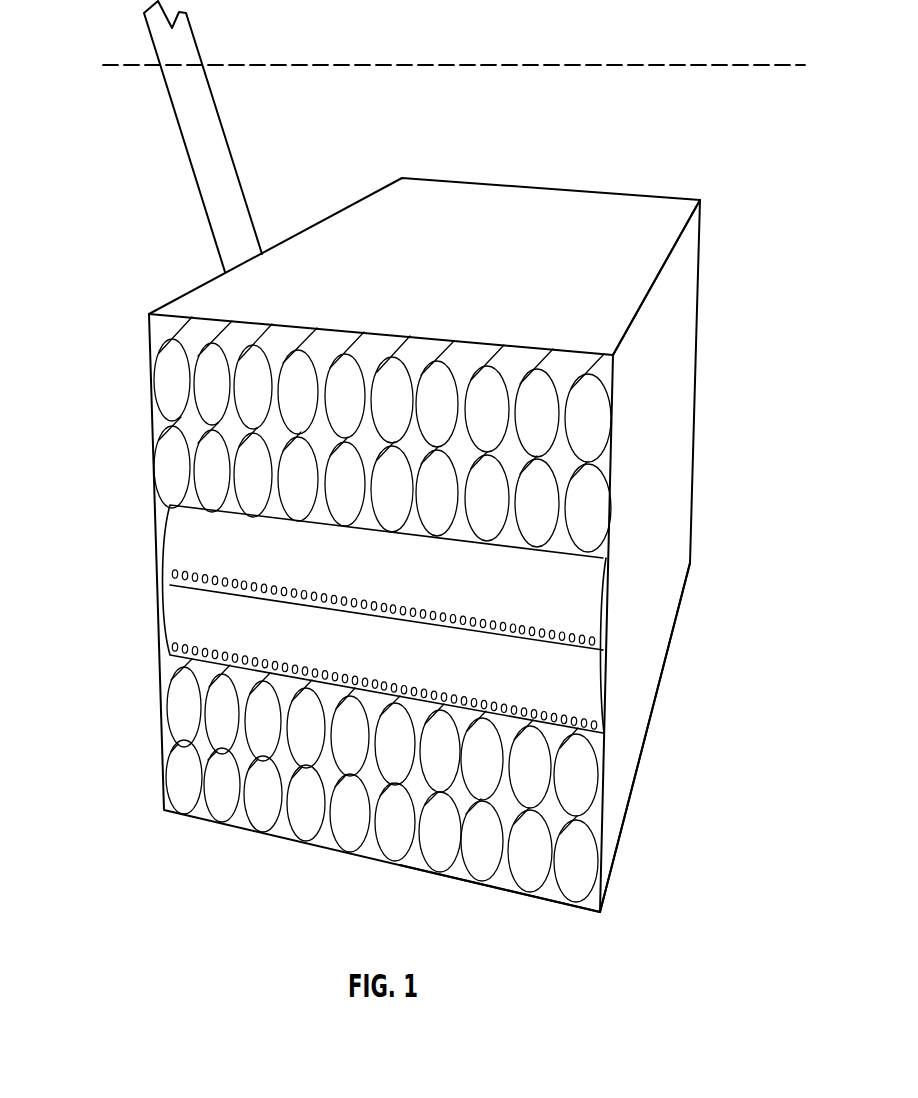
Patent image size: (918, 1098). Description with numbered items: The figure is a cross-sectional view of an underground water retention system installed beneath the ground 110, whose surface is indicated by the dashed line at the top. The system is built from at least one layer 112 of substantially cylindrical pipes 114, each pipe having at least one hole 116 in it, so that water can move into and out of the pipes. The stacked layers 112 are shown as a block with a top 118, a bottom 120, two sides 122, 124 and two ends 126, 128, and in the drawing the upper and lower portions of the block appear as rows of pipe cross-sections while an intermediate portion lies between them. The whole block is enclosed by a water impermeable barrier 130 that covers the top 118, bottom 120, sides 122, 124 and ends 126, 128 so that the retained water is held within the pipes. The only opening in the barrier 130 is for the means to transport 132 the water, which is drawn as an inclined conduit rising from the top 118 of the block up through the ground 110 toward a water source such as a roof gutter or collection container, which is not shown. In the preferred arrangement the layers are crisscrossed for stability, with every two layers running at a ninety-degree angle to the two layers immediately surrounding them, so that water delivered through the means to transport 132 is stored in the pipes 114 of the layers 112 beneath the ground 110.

The ground 110 is at (706, 61).
The layer 112 is at (602, 433).
The substantially cylindrical pipe 114 is at (473, 885).
The hole 116 is at (166, 801).
The top 118 is at (508, 243).
The bottom 120 is at (332, 850).
The side 122 is at (158, 558).
The side 124 is at (670, 606).
The end 126 is at (152, 429).
The end 128 is at (702, 243).
The water impermeable barrier 130 is at (668, 193).
The means to transport 132 is at (225, 137).